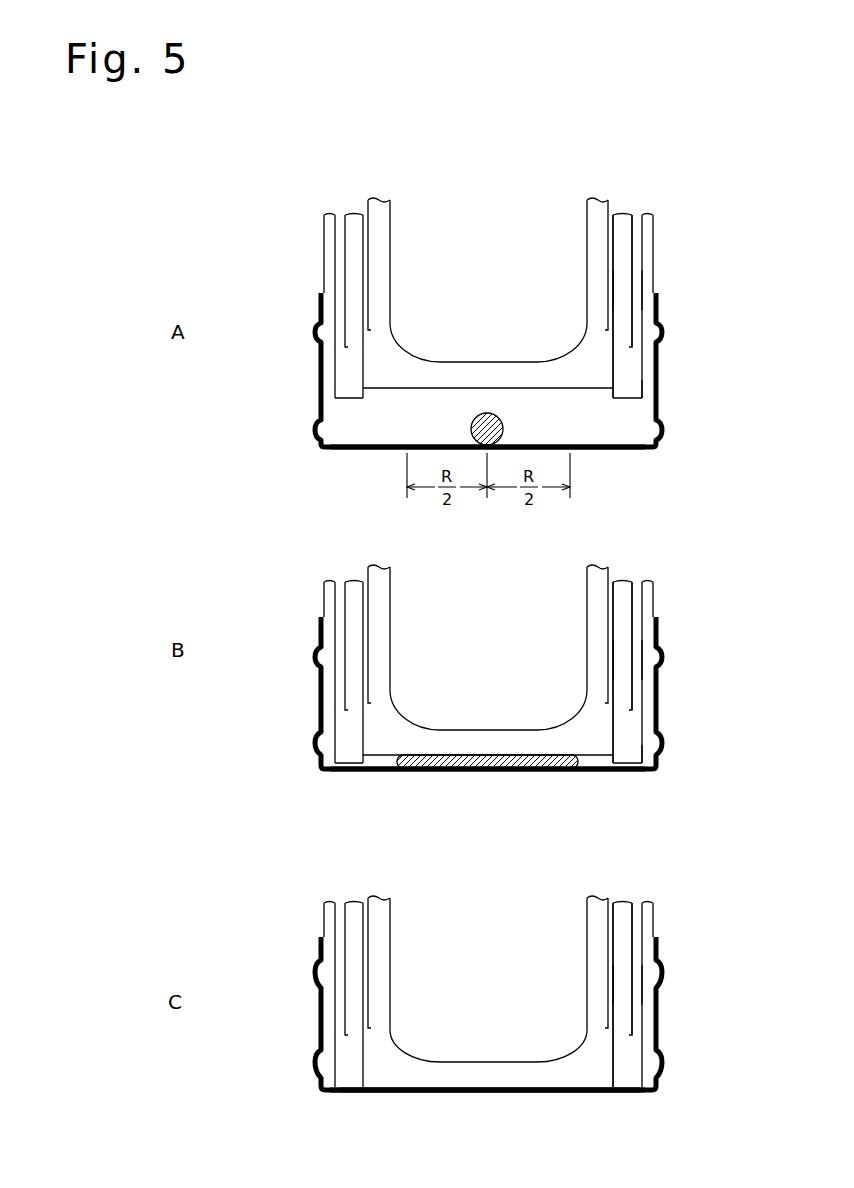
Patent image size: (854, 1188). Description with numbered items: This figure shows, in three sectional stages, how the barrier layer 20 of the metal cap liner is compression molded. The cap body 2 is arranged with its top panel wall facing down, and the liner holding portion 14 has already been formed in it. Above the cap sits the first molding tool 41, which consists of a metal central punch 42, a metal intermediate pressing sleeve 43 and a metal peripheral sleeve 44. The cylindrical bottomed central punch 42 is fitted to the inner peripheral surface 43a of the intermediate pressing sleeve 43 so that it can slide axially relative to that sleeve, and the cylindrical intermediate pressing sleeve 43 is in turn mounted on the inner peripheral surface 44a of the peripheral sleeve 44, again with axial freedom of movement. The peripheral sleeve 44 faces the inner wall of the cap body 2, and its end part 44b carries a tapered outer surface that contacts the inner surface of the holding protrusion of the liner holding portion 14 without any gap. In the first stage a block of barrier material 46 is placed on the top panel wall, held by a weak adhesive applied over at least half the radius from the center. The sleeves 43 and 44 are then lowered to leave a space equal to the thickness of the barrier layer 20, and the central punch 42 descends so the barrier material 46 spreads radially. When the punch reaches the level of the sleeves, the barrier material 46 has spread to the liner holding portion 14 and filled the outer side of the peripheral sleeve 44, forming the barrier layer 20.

The cap body 2 is at (658, 358).
The liner holding portion 14 is at (660, 443).
The barrier layer 20 is at (447, 1084).
The first molding tool 41 is at (394, 223).
The central punch 42 is at (596, 205).
The intermediate pressing sleeve 43 is at (624, 217).
The inner peripheral surface of the intermediate pressing sleeve 43a is at (610, 288).
The peripheral sleeve 44 is at (648, 216).
The inner peripheral surface of the peripheral sleeve 44a is at (634, 296).
The end part of the peripheral sleeve 44b is at (657, 389).
The barrier material 46 is at (503, 426).